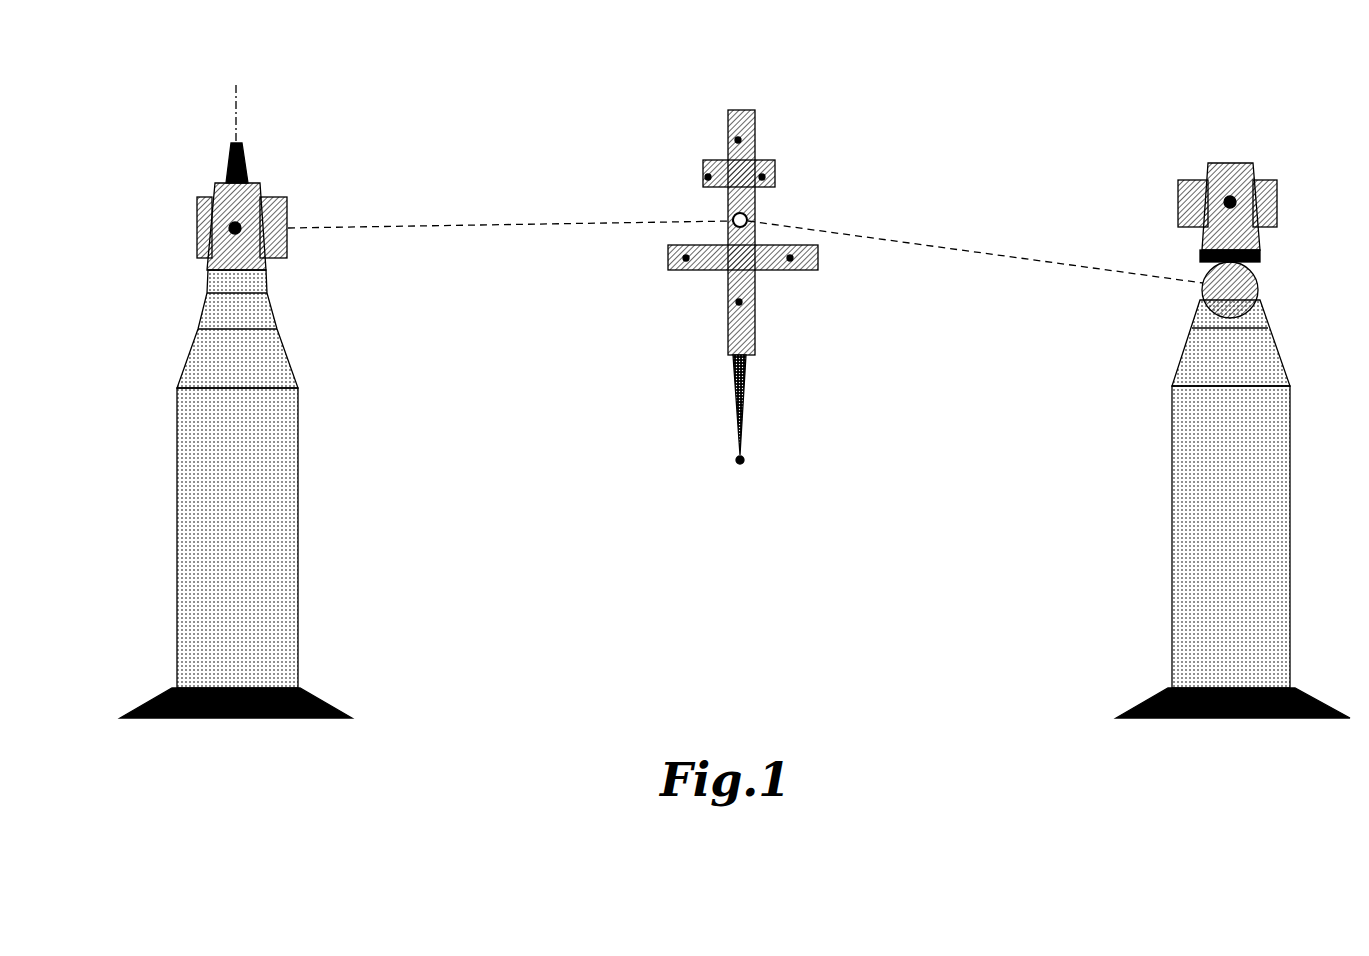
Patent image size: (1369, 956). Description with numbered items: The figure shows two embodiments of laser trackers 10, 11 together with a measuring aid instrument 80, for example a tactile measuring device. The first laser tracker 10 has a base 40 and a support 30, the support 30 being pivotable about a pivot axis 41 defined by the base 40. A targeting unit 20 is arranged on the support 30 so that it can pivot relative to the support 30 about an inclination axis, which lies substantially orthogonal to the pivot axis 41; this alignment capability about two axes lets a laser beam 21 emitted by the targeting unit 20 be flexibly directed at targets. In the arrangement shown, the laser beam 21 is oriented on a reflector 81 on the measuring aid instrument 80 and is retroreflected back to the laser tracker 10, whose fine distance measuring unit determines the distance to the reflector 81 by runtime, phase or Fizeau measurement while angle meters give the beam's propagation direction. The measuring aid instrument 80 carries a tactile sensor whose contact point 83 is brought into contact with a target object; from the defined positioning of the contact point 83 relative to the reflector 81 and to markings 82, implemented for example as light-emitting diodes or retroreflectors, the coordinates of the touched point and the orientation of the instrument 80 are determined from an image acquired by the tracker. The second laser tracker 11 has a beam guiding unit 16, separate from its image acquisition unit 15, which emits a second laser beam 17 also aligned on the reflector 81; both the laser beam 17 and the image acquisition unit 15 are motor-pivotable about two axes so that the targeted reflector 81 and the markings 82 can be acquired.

The first laser tracker 10 is at (200, 99).
The second laser tracker 11 is at (1207, 122).
The image acquisition unit 15 is at (1268, 183).
The beam guiding unit 16 is at (1248, 283).
The second laser beam 17 is at (1044, 261).
The targeting unit 20 is at (203, 205).
The laser beam 21 is at (582, 222).
The support 30 is at (245, 203).
The base 40 is at (222, 287).
The pivot axis 41 is at (237, 112).
The measuring aid instrument 80 is at (722, 85).
The reflector 81 is at (750, 214).
The markings 82 is at (739, 138).
The contact point 83 is at (741, 456).